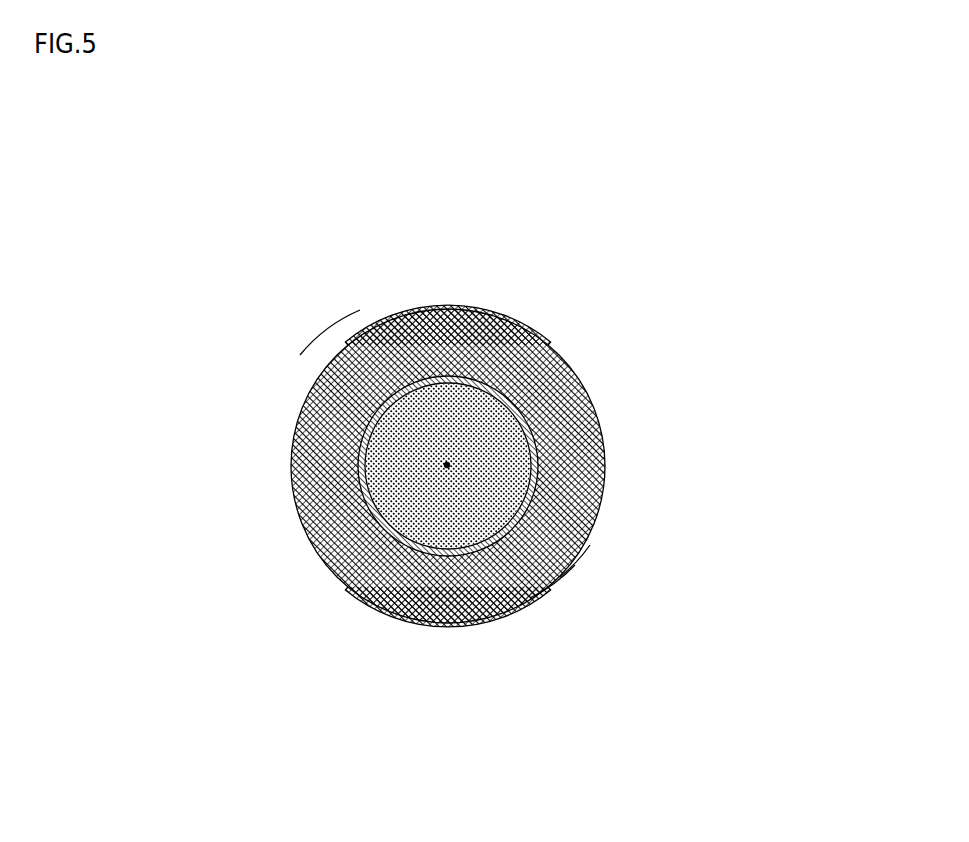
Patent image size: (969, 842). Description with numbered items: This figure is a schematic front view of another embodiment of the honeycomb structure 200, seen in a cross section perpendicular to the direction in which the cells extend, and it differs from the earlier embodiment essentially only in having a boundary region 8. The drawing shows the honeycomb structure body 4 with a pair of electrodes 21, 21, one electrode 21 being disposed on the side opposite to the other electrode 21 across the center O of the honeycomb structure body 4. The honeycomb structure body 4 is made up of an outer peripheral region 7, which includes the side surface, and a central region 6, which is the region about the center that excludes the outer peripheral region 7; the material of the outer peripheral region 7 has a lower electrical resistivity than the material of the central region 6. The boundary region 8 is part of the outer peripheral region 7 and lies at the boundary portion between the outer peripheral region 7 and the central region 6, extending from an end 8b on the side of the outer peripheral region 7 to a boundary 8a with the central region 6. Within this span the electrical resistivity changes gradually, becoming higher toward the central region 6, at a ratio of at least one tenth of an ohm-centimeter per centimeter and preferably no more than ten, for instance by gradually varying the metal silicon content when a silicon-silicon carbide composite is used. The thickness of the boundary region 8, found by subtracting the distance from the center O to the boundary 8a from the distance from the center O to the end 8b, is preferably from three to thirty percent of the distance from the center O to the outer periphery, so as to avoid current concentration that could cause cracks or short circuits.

The honeycomb structure 200 is at (850, 138).
The honeycomb structure body 4 is at (605, 459).
The electrode 21 is at (483, 307).
The boundary region 8 is at (536, 422).
The boundary with the central region 8a is at (537, 380).
The end on the side of the outer peripheral region 8b is at (328, 362).
The central region 6 is at (562, 550).
The outer peripheral region 7 is at (563, 573).
The center O is at (447, 465).